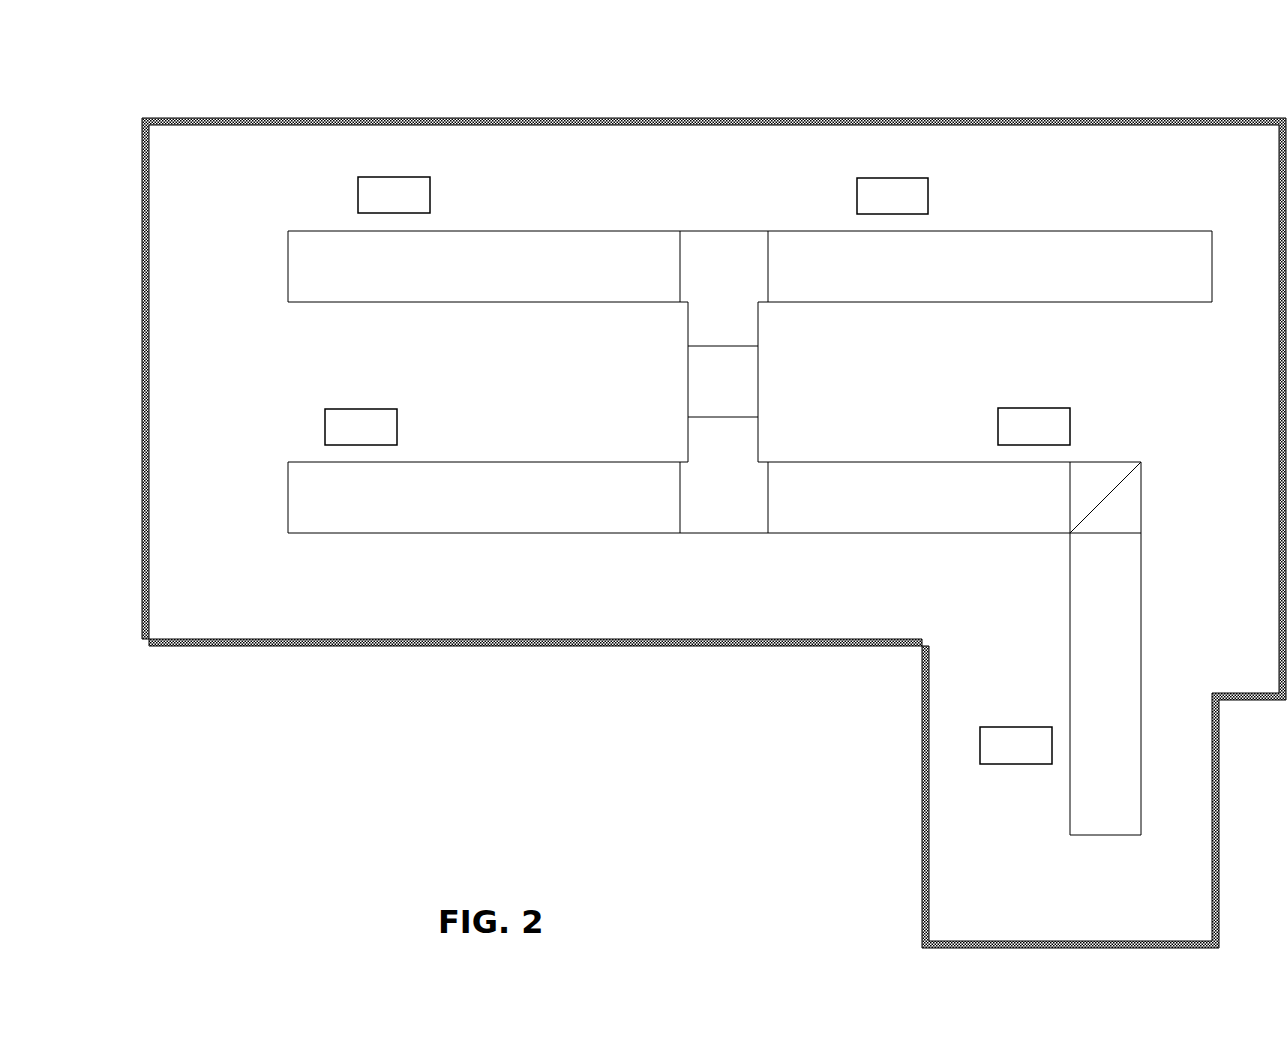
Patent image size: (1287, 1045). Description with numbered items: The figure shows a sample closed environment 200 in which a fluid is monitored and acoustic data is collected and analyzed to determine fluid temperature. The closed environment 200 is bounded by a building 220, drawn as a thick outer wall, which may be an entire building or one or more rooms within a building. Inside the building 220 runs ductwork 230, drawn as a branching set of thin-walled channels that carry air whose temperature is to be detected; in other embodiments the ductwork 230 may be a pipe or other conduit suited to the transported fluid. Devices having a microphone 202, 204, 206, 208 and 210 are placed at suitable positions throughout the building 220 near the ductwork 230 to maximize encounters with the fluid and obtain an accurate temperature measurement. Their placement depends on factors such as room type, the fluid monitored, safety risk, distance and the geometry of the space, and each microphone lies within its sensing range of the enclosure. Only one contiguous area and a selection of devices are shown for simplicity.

The closed environment 200 is at (188, 86).
The building 220 is at (430, 118).
The ductwork 230 is at (602, 231).
The device having a microphone 202 is at (394, 195).
The device having a microphone 204 is at (892, 196).
The device having a microphone 206 is at (361, 427).
The device having a microphone 208 is at (1034, 426).
The device having a microphone 210 is at (1016, 745).